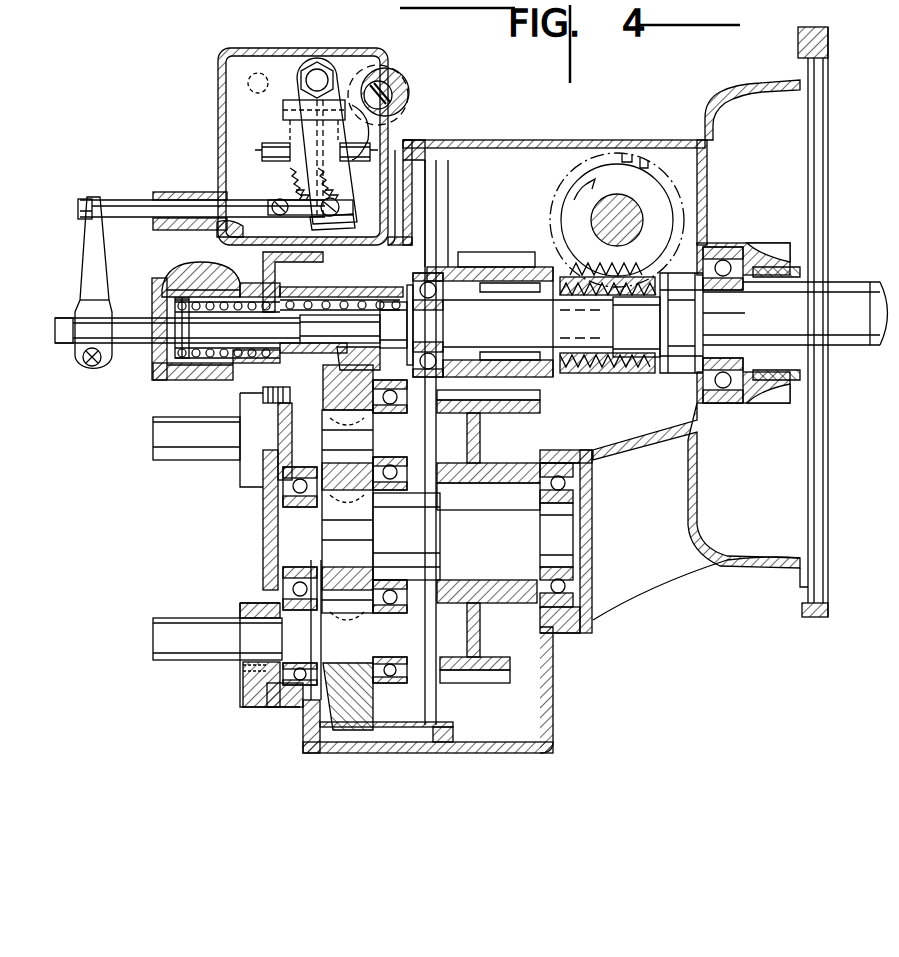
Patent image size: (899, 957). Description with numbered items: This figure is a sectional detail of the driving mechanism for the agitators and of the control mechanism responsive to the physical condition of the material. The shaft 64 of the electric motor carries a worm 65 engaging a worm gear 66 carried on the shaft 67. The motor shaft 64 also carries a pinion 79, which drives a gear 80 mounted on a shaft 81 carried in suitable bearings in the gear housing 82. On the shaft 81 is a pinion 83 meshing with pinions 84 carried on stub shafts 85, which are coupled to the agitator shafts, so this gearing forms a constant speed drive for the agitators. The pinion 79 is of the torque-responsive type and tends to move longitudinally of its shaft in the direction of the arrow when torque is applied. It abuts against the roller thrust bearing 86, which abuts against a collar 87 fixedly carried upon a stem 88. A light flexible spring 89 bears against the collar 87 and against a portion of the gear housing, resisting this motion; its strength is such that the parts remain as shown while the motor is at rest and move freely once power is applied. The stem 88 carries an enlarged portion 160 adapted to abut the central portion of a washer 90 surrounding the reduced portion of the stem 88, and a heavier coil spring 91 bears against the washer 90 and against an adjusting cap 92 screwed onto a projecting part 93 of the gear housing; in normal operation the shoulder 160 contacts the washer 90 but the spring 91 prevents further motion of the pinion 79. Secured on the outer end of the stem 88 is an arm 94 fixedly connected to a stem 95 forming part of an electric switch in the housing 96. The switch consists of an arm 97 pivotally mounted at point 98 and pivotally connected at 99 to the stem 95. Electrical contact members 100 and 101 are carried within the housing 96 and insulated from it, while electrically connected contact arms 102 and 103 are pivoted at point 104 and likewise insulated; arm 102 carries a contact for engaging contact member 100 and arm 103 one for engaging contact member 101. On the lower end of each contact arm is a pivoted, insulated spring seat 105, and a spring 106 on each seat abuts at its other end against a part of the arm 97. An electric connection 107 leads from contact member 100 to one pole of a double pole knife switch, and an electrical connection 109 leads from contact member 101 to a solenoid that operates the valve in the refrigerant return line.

The motor shaft 64 is at (840, 282).
The worm 65 is at (628, 374).
The worm gear 66 is at (645, 150).
The shaft 67 is at (592, 220).
The pinion 79 is at (462, 241).
The gear 80 is at (503, 683).
The shaft 81 is at (573, 525).
The gear housing 82 is at (592, 578).
The pinion 83 is at (372, 565).
The pinions 84 is at (335, 385).
The stub shafts 85 is at (205, 462).
The roller thrust bearing 86 is at (422, 280).
The collar 87 is at (410, 285).
The stem 88 is at (135, 344).
The light flexible spring 89 is at (322, 295).
The washer 90 is at (265, 280).
The heavier coil spring 91 is at (215, 380).
The adjusting cap 92 is at (160, 275).
The projecting part 93 is at (225, 270).
The arm 94 is at (104, 262).
The stem 95 is at (120, 198).
The housing 96 is at (258, 50).
The arm 97 is at (340, 70).
The pivot point 98 is at (317, 72).
The pivotal connection 99 is at (342, 207).
The contact member 100 is at (360, 158).
The contact member 101 is at (282, 162).
The contact arm 102 is at (318, 125).
The contact arm 103 is at (290, 140).
The pivot point 104 is at (295, 100).
The spring seat 105 is at (296, 178).
The spring 106 is at (300, 190).
The electric connection 107 is at (390, 92).
The electrical connection 109 is at (392, 68).
The enlarged portion 160 is at (353, 325).